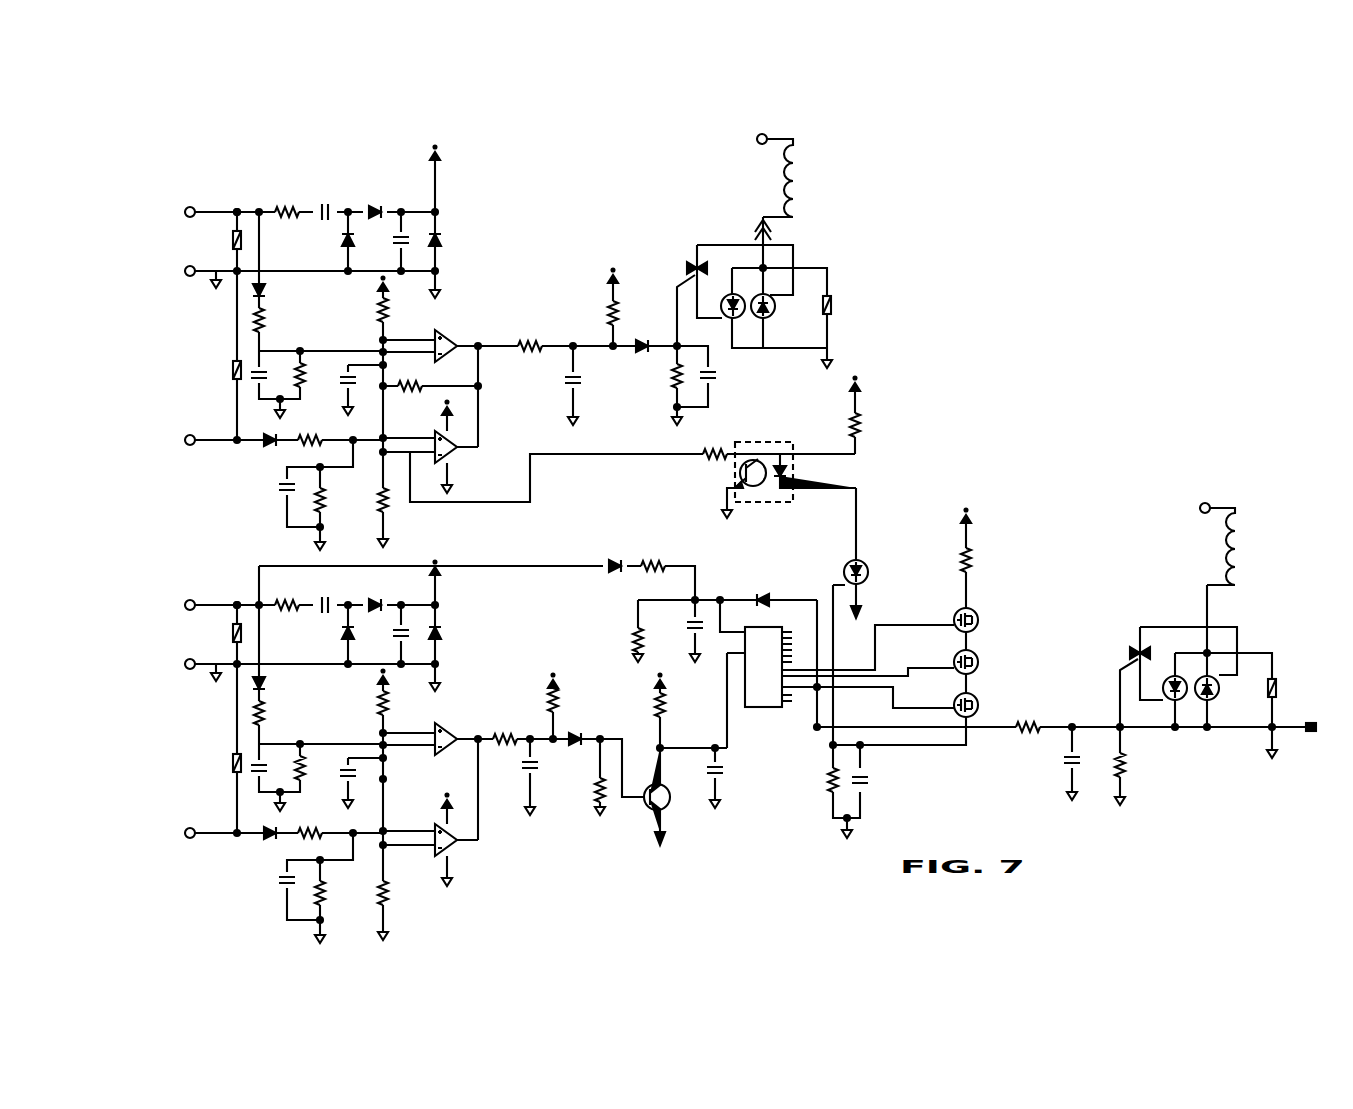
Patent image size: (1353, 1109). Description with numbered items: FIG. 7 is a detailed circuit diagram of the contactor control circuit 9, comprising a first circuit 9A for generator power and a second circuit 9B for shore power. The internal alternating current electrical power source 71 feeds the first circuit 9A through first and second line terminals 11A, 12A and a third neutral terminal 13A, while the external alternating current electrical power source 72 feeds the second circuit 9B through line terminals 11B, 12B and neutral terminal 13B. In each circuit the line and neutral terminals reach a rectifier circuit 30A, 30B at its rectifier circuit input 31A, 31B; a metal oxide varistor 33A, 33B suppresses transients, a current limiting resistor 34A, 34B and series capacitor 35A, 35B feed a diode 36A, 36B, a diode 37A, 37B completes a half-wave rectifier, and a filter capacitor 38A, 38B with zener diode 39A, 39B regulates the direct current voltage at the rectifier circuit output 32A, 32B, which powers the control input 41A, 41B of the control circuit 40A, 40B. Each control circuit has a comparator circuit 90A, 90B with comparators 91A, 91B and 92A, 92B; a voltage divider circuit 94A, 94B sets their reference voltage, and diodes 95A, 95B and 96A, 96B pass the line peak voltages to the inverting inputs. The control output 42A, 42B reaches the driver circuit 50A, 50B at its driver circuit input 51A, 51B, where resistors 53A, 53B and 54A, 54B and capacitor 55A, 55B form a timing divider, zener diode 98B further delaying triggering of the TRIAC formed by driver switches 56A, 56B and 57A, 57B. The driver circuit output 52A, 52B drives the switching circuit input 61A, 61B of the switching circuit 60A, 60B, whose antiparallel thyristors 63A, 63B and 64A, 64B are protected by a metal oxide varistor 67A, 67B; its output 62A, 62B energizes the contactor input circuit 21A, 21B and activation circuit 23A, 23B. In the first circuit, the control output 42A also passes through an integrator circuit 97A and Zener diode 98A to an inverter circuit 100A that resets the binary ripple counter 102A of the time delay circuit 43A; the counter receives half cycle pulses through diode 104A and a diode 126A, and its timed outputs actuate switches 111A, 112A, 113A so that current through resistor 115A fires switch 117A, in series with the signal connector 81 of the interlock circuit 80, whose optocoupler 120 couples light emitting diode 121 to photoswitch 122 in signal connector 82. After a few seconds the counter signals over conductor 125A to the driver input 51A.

The contactor control circuit 9 is at (1163, 283).
The first circuit 9A is at (1178, 838).
The second circuit 9B is at (963, 290).
The internal alternating current electrical power source 71 is at (186, 556).
The external alternating current electrical power source 72 is at (190, 192).
The first line terminal 11A is at (164, 594).
The first line terminal 11B is at (185, 208).
The second line terminal 12A is at (162, 841).
The second line terminal 12B is at (185, 442).
The third neutral terminal 13A is at (164, 670).
The third neutral terminal 13B is at (185, 272).
The input circuit 21A is at (1240, 537).
The input circuit 21B is at (798, 177).
The activation circuit 23A is at (1240, 550).
The activation circuit 23B is at (796, 191).
The rectifier circuit 30A is at (318, 678).
The rectifier circuit 30B is at (305, 192).
The rectifier circuit input 31A is at (232, 585).
The rectifier circuit input 31B is at (237, 210).
The rectifier circuit output 32A is at (467, 626).
The rectifier circuit output 32B is at (440, 210).
The metal oxide varistor 33A is at (208, 719).
The metal oxide varistor 33B is at (232, 240).
The current limiting resistor 34A is at (285, 618).
The current limiting resistor 34B is at (284, 225).
The series capacitor 35A is at (340, 590).
The series capacitor 35B is at (330, 208).
The diode 36A is at (390, 589).
The diode 36B is at (378, 208).
The diode 37A is at (322, 643).
The diode 37B is at (345, 245).
The filter capacitor 38A is at (382, 644).
The filter capacitor 38B is at (397, 244).
The zener diode 39A is at (460, 632).
The zener diode 39B is at (442, 243).
The control circuit 40A is at (437, 702).
The control circuit 40B is at (462, 308).
The control input 41A is at (382, 805).
The control input 41B is at (385, 340).
The control output 42A is at (478, 736).
The control output 42B is at (478, 343).
The time delay circuit 43A is at (752, 582).
The driver circuit 50A is at (1098, 604).
The driver circuit 50B is at (610, 242).
The driver input 51A is at (998, 736).
The driver circuit input 51B is at (450, 384).
The driver circuit output 52A is at (1138, 630).
The driver circuit output 52B is at (695, 246).
The resistor 53A is at (1030, 725).
The resistor 53B is at (530, 343).
The resistor 54A is at (1125, 766).
The resistor 54B is at (677, 380).
The capacitor 55A is at (1070, 766).
The capacitor 55B is at (573, 383).
The first driver switch 56A is at (1130, 654).
The first driver switch 56B is at (688, 270).
The second driver switch 57A is at (1149, 653).
The second driver switch 57B is at (708, 270).
The switching circuit 60A is at (1230, 758).
The switching circuit 60B is at (868, 237).
The switching circuit input 61A is at (1140, 645).
The switching circuit input 61B is at (697, 262).
The relay switching network 62A is at (1210, 655).
The relay switching network 62B is at (775, 270).
The first solid state switch 63A is at (1170, 702).
The first solid state switch 63B is at (728, 320).
The second solid state switch 64A is at (1217, 697).
The second solid state switch 64B is at (772, 318).
The metal oxide varistor 67A is at (1280, 691).
The metal oxide varistor 67B is at (835, 305).
The interlock circuit 80 is at (890, 443).
The signal connector 81 is at (860, 506).
The signal connector 82 is at (592, 462).
The comparator circuit 90A is at (317, 807).
The comparator circuit 90B is at (378, 346).
The comparator 91A is at (430, 746).
The comparator 91B is at (450, 355).
The comparator 92A is at (443, 840).
The comparator 92B is at (443, 440).
The voltage divider circuit 94A is at (289, 876).
The voltage divider circuit 94B is at (383, 435).
The diode 95A is at (281, 674).
The diode 95B is at (262, 290).
The diode 96A is at (253, 849).
The diode 96B is at (270, 448).
The integrator circuit 97A is at (527, 750).
The Zener diode 98A is at (575, 752).
The zener diode 98B is at (640, 352).
The inverter circuit 100A is at (662, 808).
The binary ripple counter 102A is at (758, 708).
The diode 104A is at (615, 571).
The switch 111A is at (978, 621).
The switch 112A is at (975, 660).
The switch 113A is at (975, 700).
The resistor 115A is at (830, 785).
The switch 117A is at (870, 572).
The optocoupler 120 is at (752, 442).
The light emitting diode 121 is at (792, 473).
The photoswitch 122 is at (740, 471).
The conductor 125A is at (806, 742).
The diode 126A is at (770, 600).